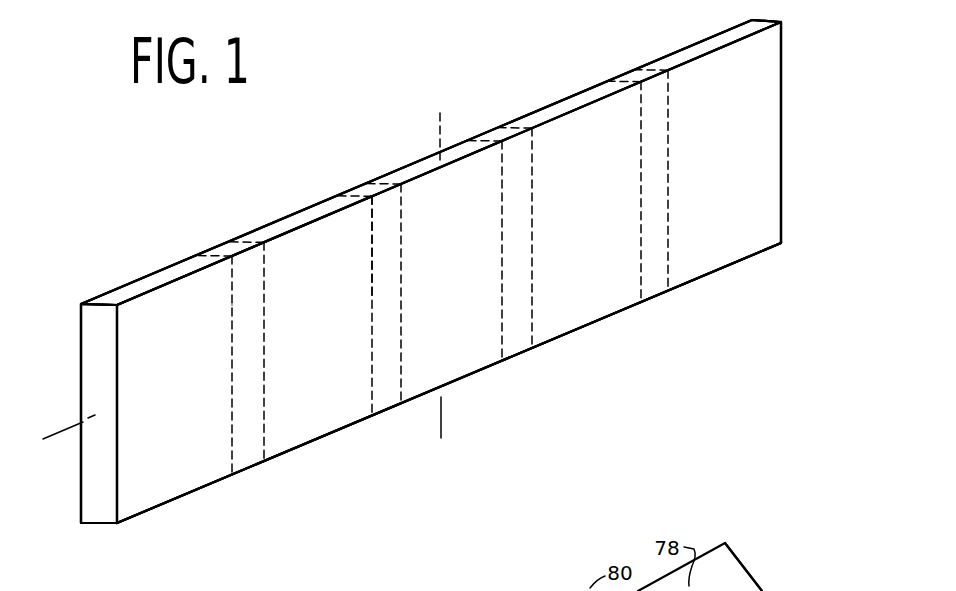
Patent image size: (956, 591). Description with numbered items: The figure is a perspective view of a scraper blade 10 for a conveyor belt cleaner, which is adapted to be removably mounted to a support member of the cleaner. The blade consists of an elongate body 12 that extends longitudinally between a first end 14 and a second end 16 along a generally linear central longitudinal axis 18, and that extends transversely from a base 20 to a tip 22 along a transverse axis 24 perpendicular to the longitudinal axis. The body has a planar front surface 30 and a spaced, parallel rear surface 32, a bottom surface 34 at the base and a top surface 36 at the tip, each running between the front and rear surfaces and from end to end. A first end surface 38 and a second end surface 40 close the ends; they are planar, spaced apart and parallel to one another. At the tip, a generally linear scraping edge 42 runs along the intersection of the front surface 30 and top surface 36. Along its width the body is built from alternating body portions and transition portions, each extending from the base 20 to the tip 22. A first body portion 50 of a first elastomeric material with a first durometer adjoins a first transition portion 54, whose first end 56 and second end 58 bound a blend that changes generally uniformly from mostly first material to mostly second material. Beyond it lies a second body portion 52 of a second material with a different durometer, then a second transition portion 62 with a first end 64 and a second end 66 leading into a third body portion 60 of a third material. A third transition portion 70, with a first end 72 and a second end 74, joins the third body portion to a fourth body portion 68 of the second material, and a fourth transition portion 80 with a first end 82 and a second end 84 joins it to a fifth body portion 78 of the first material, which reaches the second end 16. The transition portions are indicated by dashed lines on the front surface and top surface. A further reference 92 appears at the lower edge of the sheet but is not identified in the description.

The scraper blade 10 is at (431, 271).
The elongate body 12 is at (146, 276).
The first end 14 is at (96, 473).
The second end 16 is at (783, 205).
The central longitudinal axis 18 is at (786, 131).
The base 20 is at (599, 315).
The tip 22 is at (552, 110).
The transverse axis 24 is at (440, 116).
The front surface 30 is at (494, 367).
The rear surface 32 is at (80, 344).
The bottom surface 34 is at (100, 527).
The top surface 36 is at (283, 223).
The first end surface 38 is at (100, 327).
The second end surface 40 is at (783, 56).
The scraping edge 42 is at (320, 224).
The first body portion 50 is at (181, 500).
The second body portion 52 is at (334, 440).
The first transition portion 54 is at (260, 469).
The first end of first transition portion 56 is at (232, 350).
The second end of first transition portion 58 is at (266, 353).
The third body portion 60 is at (424, 392).
The second transition portion 62 is at (389, 414).
The first end of second transition portion 64 is at (371, 295).
The second end of second transition portion 66 is at (403, 277).
The fourth body portion 68 is at (576, 335).
The third transition portion 70 is at (525, 352).
The first end of third transition portion 72 is at (501, 290).
The second end of third transition portion 74 is at (534, 283).
The fifth body portion 78 is at (745, 265).
The fourth transition portion 80 is at (662, 298).
The first end of fourth transition portion 82 is at (640, 185).
The second end of fourth transition portion 84 is at (669, 186).
The folded flap 92 is at (747, 588).